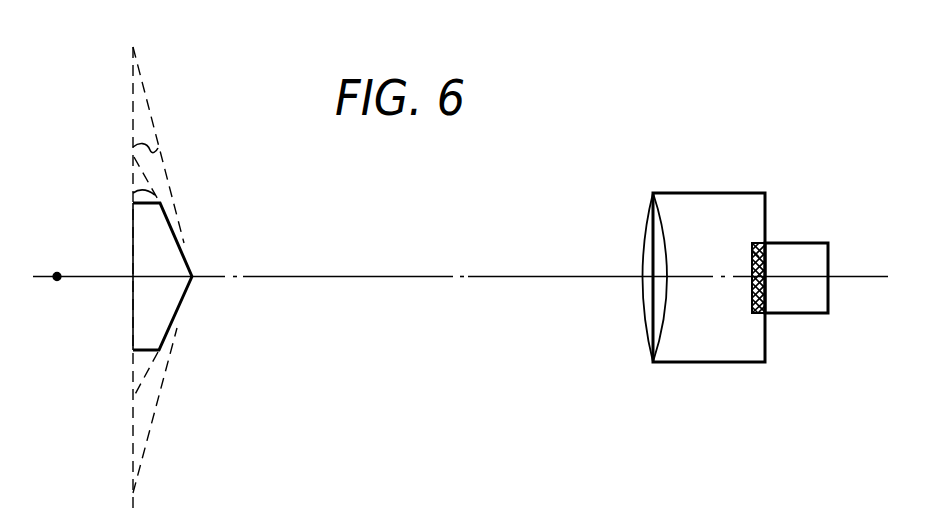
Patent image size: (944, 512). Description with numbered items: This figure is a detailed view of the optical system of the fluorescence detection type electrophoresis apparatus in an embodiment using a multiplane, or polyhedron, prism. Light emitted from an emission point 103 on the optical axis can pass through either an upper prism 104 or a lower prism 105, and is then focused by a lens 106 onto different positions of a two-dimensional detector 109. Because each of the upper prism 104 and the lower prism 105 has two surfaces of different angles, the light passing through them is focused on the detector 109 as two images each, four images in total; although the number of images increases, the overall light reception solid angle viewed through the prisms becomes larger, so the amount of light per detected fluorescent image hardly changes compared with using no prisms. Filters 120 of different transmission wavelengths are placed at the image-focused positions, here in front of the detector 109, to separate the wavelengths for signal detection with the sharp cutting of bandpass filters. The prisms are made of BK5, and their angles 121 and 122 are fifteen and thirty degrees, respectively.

The emission point 103 is at (58, 272).
The upper prism 104 is at (168, 247).
The lower prism 105 is at (170, 292).
The lens 106 is at (657, 215).
The two-dimensional detector 109 is at (815, 255).
The filters 120 is at (763, 258).
The angle 121 is at (158, 150).
The angle 122 is at (157, 191).